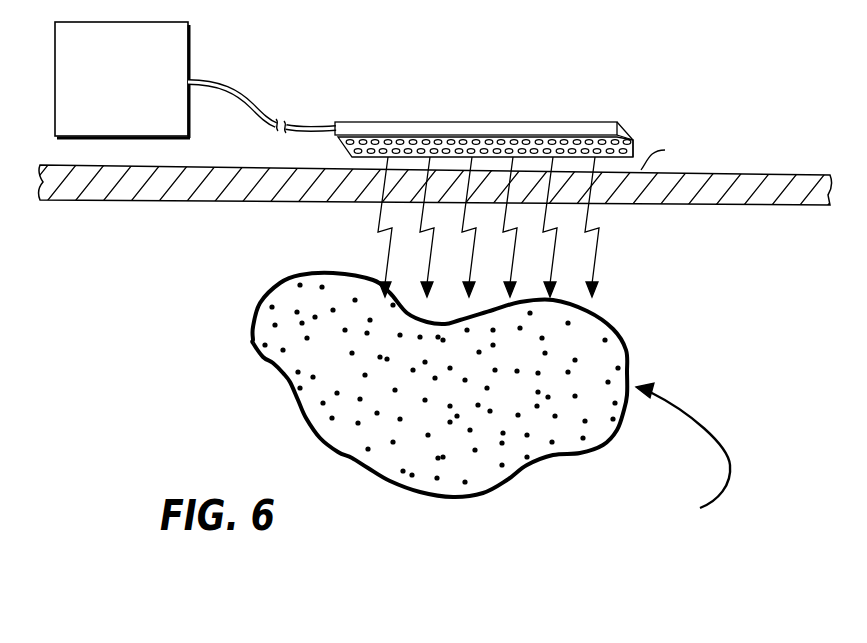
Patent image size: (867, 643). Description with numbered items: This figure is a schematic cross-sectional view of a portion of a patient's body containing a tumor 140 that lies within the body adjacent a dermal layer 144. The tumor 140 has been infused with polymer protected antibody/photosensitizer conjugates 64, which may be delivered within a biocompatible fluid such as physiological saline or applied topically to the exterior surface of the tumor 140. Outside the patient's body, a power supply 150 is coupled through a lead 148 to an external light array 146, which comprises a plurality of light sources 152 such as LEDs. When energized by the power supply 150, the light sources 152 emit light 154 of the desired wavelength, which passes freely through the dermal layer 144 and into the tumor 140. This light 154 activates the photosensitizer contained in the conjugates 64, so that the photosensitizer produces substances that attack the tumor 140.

The power supply 150 is at (193, 28).
The lead 148 is at (240, 90).
The external light array 146 is at (627, 133).
The light sources 152 is at (350, 154).
The dermal layer 144 is at (74, 166).
The light 154 is at (378, 232).
The tumor 140 is at (277, 368).
The polymer protected antibody/photosensitizer conjugates 64 is at (272, 326).